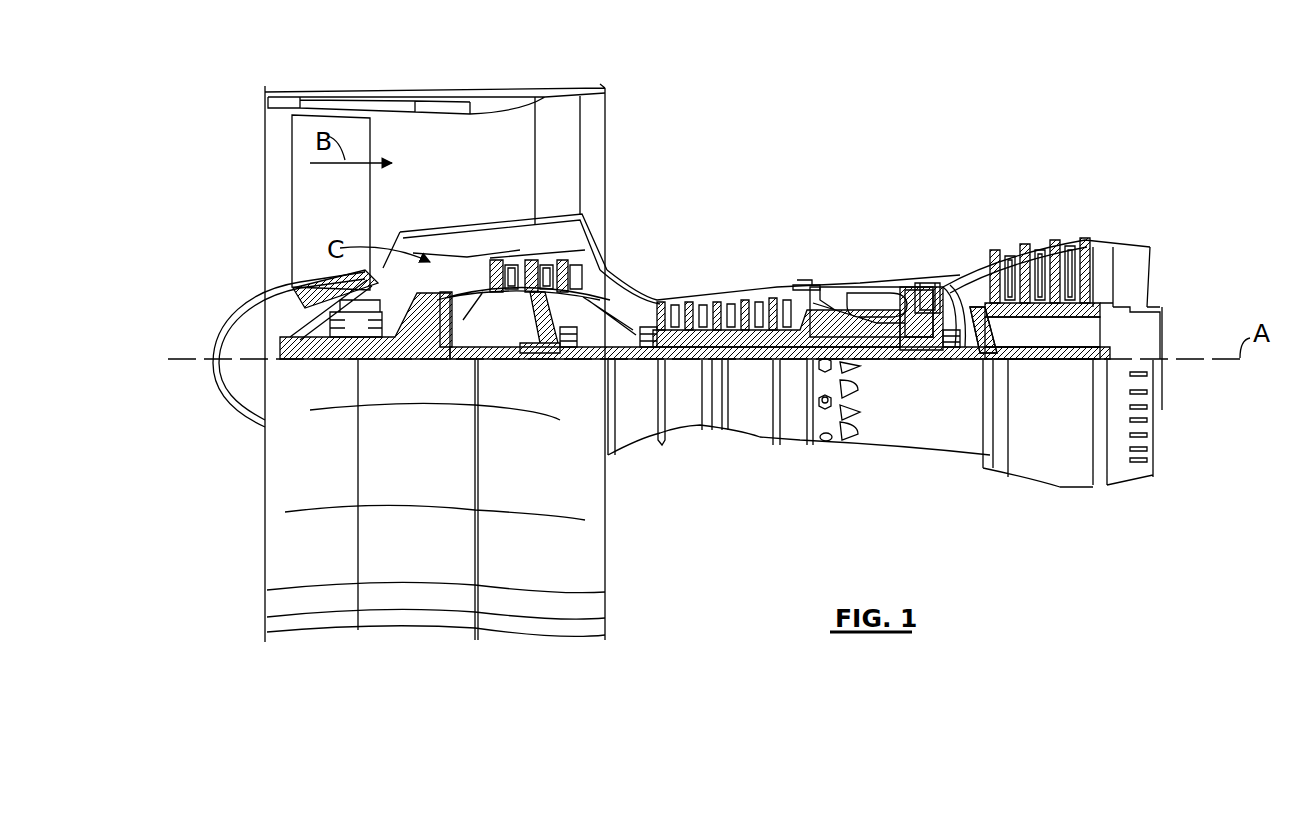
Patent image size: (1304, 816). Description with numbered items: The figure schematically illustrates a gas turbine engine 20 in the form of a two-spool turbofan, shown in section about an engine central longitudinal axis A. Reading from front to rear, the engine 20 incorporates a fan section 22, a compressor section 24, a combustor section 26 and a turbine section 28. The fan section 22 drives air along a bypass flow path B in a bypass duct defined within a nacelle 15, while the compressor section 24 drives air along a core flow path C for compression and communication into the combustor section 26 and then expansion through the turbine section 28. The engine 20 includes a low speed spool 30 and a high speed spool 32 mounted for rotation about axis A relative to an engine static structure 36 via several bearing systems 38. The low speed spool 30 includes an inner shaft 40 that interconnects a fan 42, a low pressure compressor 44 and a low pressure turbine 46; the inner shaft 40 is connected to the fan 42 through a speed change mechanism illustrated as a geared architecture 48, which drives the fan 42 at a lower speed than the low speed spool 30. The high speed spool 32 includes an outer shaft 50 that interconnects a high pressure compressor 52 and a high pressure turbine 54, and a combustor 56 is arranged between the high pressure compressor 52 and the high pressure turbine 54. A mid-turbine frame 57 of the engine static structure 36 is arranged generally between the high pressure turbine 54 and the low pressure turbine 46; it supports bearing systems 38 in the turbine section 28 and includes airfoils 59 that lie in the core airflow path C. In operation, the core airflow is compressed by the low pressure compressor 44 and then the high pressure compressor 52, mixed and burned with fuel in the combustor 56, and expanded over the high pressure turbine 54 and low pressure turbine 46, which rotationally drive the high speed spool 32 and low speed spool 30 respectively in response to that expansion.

The nacelle 15 is at (437, 97).
The gas turbine engine 20 is at (870, 137).
The fan section 22 is at (368, 82).
The compressor section 24 is at (652, 268).
The combustor section 26 is at (871, 271).
The turbine section 28 is at (1046, 243).
The low speed spool 30 is at (753, 368).
The high speed spool 32 is at (797, 283).
The engine static structure 36 is at (792, 445).
The bearing systems 38 is at (565, 353).
The inner shaft 40 is at (627, 360).
The fan 42 is at (345, 216).
The low pressure compressor 44 is at (538, 270).
The low pressure turbine 46 is at (1045, 257).
The geared architecture 48 is at (443, 343).
The outer shaft 50 is at (867, 360).
The high pressure compressor 52 is at (727, 300).
The high pressure turbine 54 is at (923, 283).
The combustor 56 is at (863, 305).
The mid-turbine frame 57 is at (965, 265).
The airfoils 59 is at (963, 300).